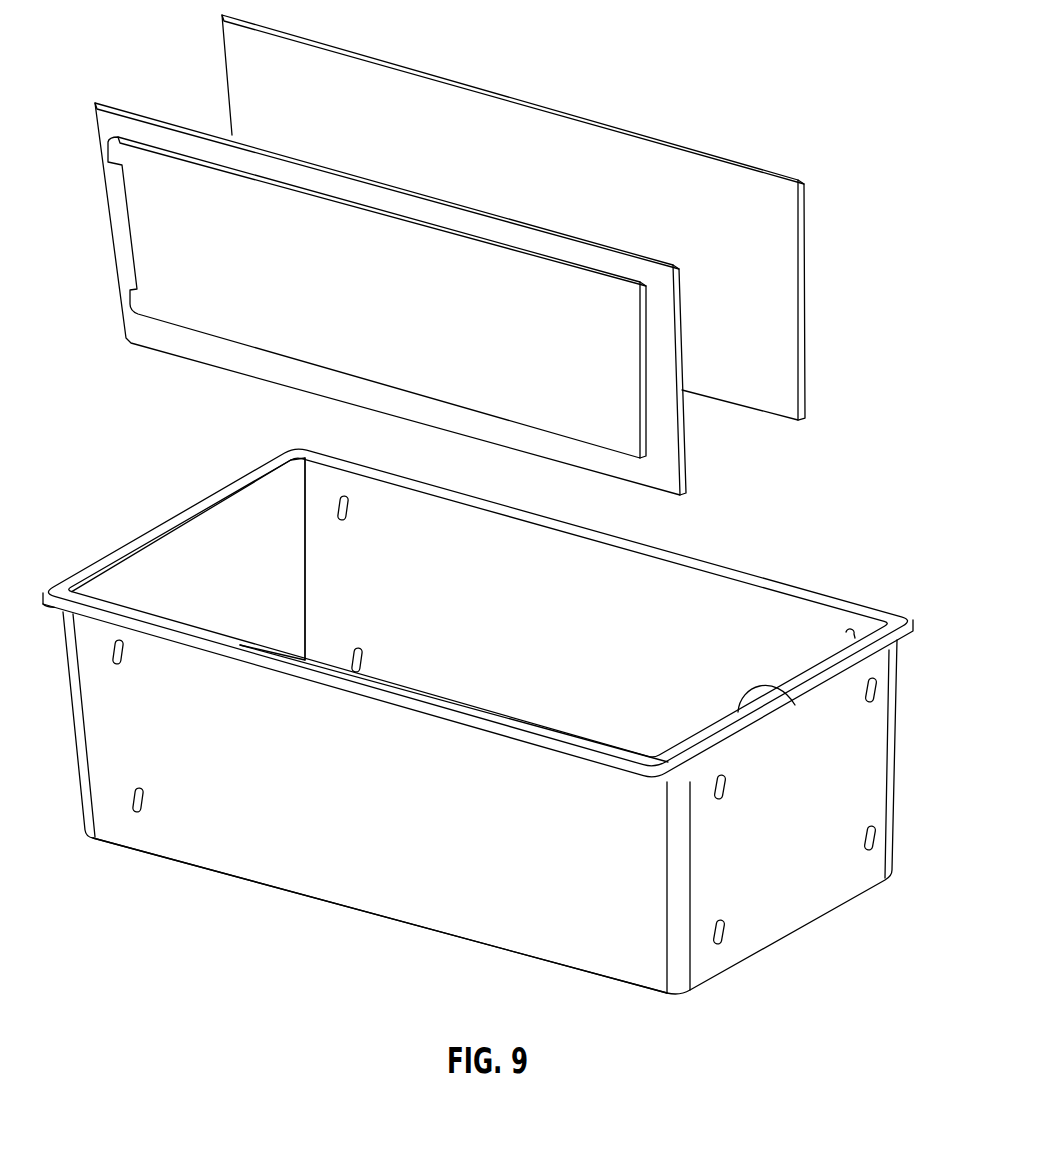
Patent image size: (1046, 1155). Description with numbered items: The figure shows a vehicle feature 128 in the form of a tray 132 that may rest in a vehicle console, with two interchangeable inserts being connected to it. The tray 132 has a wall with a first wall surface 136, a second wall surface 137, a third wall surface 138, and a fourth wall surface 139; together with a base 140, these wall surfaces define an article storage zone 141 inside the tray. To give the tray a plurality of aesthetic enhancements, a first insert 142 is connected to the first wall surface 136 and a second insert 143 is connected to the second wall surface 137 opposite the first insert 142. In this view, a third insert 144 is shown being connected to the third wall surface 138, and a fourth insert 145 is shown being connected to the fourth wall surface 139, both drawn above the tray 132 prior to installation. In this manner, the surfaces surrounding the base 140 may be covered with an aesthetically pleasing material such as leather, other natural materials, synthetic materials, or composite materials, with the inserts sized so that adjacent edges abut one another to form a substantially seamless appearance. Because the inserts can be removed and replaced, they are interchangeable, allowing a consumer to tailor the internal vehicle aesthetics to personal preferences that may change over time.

The vehicle feature 128 is at (501, 711).
The tray 132 is at (205, 487).
The first wall surface 136 is at (195, 543).
The second wall surface 137 is at (773, 875).
The third wall surface 138 is at (265, 832).
The fourth wall surface 139 is at (712, 602).
The base 140 is at (402, 921).
The article storage zone 141 is at (180, 548).
The first insert 142 is at (250, 512).
The second insert 143 is at (760, 683).
The third insert 144 is at (160, 241).
The fourth insert 145 is at (393, 62).